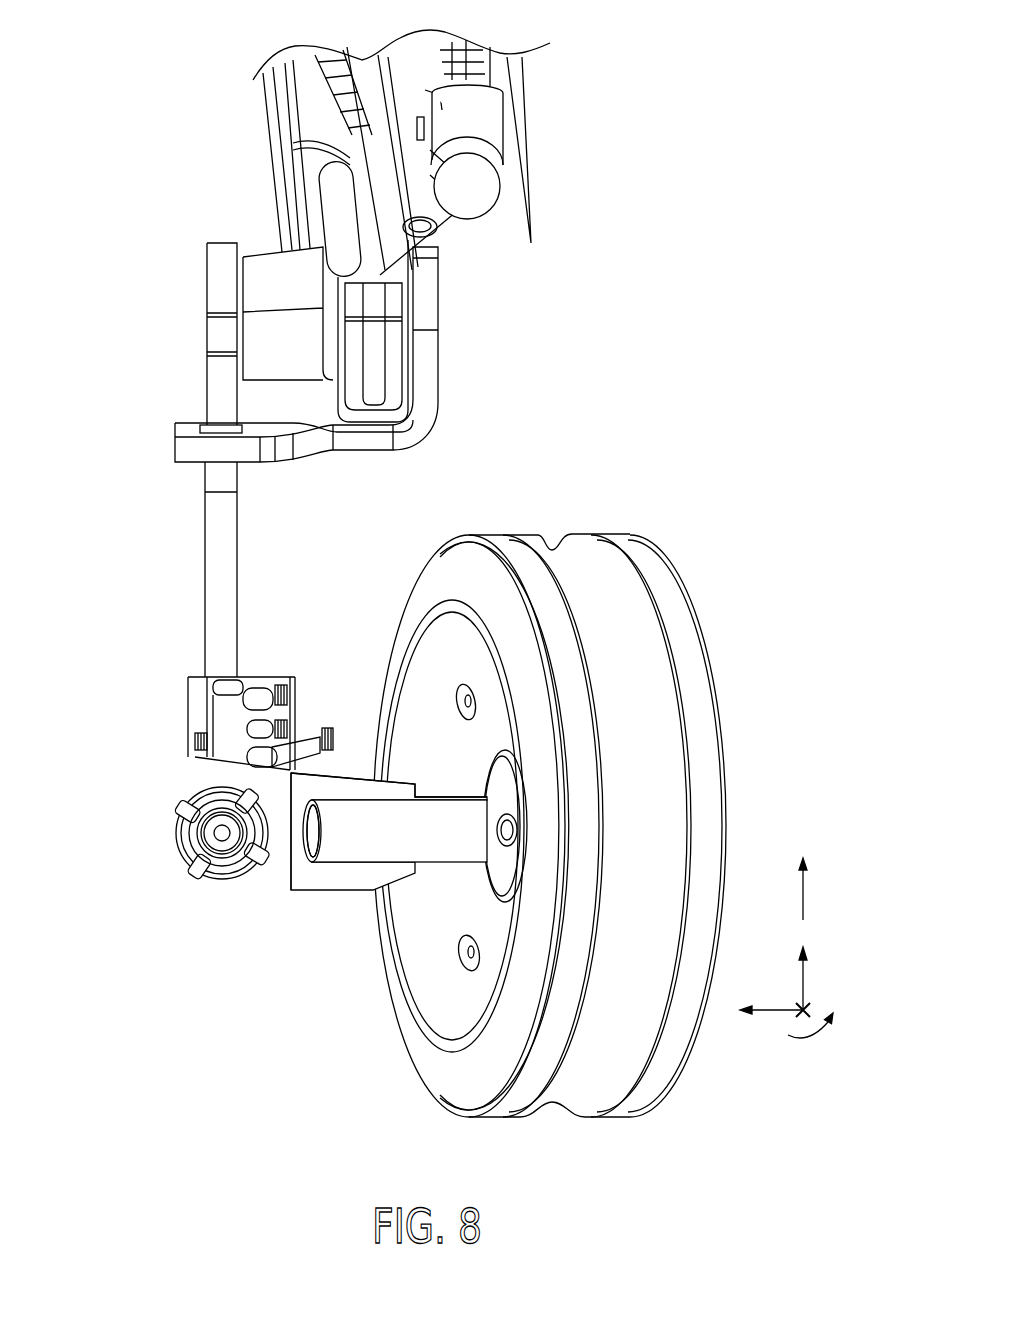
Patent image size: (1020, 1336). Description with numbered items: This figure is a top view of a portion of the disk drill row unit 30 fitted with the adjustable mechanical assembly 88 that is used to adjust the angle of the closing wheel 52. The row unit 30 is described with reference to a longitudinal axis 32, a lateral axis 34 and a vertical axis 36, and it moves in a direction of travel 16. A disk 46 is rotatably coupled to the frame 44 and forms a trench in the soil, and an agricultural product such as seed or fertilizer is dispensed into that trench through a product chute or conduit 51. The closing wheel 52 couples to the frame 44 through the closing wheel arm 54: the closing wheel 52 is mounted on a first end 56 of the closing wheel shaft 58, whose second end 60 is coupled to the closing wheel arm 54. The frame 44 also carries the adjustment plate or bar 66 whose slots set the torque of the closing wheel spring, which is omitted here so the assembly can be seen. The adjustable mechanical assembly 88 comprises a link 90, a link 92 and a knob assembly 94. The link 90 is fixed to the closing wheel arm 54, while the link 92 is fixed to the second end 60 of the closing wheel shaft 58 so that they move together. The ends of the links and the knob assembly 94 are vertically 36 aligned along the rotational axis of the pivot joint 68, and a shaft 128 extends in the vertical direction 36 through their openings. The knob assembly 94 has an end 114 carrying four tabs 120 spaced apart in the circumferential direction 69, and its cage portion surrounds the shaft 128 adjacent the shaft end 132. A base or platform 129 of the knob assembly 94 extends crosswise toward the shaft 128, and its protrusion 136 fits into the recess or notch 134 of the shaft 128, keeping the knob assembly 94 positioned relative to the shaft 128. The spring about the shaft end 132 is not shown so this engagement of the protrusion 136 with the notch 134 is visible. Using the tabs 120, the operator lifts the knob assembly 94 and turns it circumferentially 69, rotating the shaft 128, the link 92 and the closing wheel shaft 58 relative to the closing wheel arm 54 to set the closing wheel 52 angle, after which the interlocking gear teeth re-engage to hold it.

The row unit 30 is at (240, 139).
The product chute or conduit 51 is at (330, 212).
The frame 44 is at (272, 228).
The disk 46 is at (535, 175).
The closing wheel arm 54 is at (213, 592).
The closing wheel 52 is at (682, 638).
The first end of closing wheel shaft 56 is at (482, 851).
The closing wheel shaft 58 is at (442, 850).
The second end of closing wheel shaft 60 is at (305, 850).
The adjustment plate or bar 66 is at (262, 697).
The link 90 is at (295, 708).
The end of knob assembly 114 is at (272, 809).
The link 92 is at (340, 888).
The pivot joint 68 is at (167, 869).
The adjustable mechanical assembly 88 is at (236, 847).
The knob assembly 94 is at (199, 884).
The base or platform 129 is at (262, 825).
The recess or notch 134 is at (210, 820).
The extension or protrusion 136 is at (193, 812).
The tabs 120 is at (183, 807).
The shaft 128 is at (222, 848).
The end of shaft 132 is at (237, 857).
The direction of travel 16 is at (802, 895).
The longitudinal axis or direction 32 is at (802, 983).
The lateral axis or direction 34 is at (782, 1010).
The vertical axis or direction 36 is at (809, 1001).
The circumferential direction 69 is at (812, 1037).